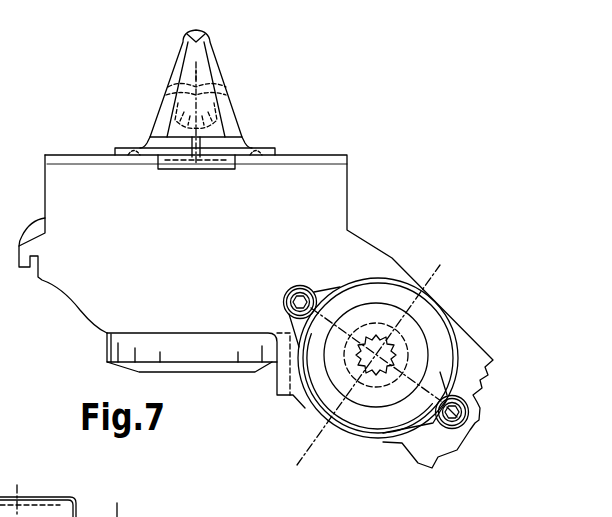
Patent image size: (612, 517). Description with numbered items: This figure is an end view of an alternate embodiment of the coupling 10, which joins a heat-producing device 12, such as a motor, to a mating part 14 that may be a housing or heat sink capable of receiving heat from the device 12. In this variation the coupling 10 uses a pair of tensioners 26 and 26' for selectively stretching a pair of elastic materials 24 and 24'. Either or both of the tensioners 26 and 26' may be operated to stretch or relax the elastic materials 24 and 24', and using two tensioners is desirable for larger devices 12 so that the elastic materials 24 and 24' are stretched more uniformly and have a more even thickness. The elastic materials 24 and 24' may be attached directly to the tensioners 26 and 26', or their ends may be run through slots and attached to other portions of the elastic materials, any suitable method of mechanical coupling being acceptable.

The coupling 10 is at (230, 400).
The device 12 is at (393, 292).
The mating part 14 is at (338, 193).
The elastic material 24 is at (378, 391).
The elastic material 24' is at (416, 358).
The tensioner 26 is at (277, 279).
The tensioner 26' is at (490, 412).